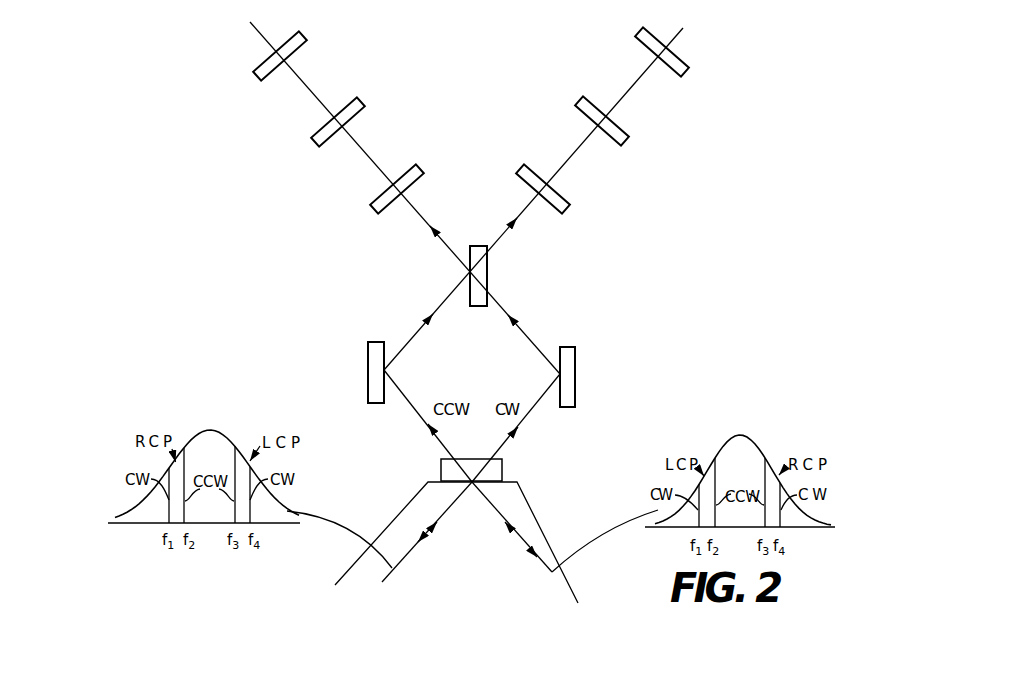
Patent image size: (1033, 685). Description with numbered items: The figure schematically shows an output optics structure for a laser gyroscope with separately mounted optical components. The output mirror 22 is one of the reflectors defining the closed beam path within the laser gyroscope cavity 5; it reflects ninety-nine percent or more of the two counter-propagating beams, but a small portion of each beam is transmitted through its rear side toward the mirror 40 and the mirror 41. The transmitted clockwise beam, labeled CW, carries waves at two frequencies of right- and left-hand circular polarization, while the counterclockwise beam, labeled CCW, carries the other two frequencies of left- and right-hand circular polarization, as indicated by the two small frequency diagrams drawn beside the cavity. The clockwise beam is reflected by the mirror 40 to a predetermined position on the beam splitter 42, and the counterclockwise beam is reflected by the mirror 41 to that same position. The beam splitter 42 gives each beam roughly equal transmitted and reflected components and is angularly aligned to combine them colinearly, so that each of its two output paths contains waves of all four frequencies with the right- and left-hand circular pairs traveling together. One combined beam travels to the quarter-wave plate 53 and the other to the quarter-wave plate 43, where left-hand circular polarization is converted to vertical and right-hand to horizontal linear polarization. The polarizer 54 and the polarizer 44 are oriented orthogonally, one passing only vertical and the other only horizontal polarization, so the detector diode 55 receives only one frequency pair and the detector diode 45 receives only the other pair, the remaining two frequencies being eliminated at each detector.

The laser gyroscope cavity 5 is at (456, 542).
The output mirror 22 is at (503, 465).
The mirror 40 is at (575, 377).
The mirror 41 is at (368, 381).
The beam splitter 42 is at (487, 280).
The quarter-wave plate 43 is at (570, 210).
The polarizer 44 is at (628, 141).
The detector diode 45 is at (681, 76).
The quarter-wave plate 53 is at (257, 188).
The polarizer 54 is at (250, 124).
The detector diode 55 is at (172, 55).